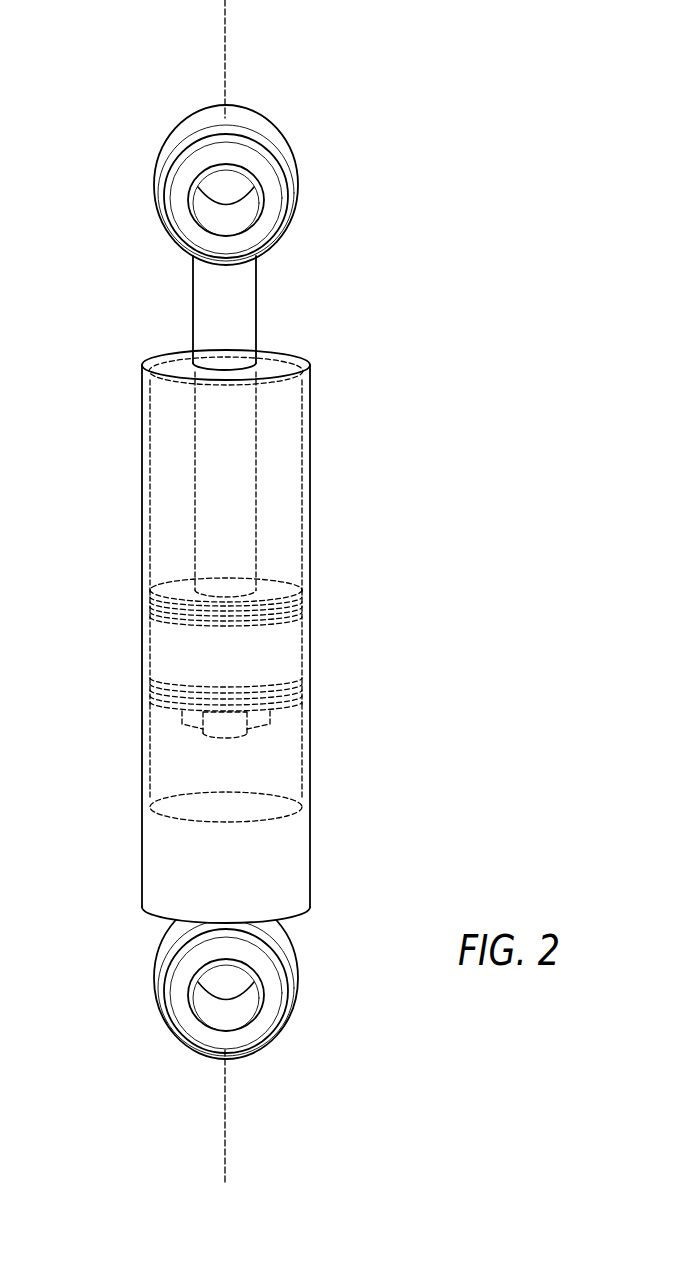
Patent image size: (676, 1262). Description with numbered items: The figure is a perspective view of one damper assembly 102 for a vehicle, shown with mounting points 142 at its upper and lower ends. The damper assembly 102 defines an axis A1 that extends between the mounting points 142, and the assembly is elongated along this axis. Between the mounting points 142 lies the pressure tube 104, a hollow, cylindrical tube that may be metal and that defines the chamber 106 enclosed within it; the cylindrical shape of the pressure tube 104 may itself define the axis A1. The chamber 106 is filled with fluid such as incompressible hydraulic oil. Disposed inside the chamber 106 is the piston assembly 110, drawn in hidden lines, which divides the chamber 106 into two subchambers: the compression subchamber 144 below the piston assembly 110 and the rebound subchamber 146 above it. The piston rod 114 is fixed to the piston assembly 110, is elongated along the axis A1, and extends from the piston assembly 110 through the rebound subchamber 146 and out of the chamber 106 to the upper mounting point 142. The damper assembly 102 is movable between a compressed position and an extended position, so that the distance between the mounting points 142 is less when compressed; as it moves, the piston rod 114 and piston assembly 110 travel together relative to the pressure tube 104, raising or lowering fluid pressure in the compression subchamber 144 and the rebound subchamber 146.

The axis A1 is at (226, 41).
The damper assembly 102 is at (480, 172).
The pressure tube 104 is at (309, 505).
The chamber 106 is at (283, 450).
The piston assembly 110 is at (285, 655).
The piston rod 114 is at (205, 312).
The mounting points 142 is at (154, 182).
The compression subchamber 144 is at (165, 765).
The rebound subchamber 146 is at (175, 446).